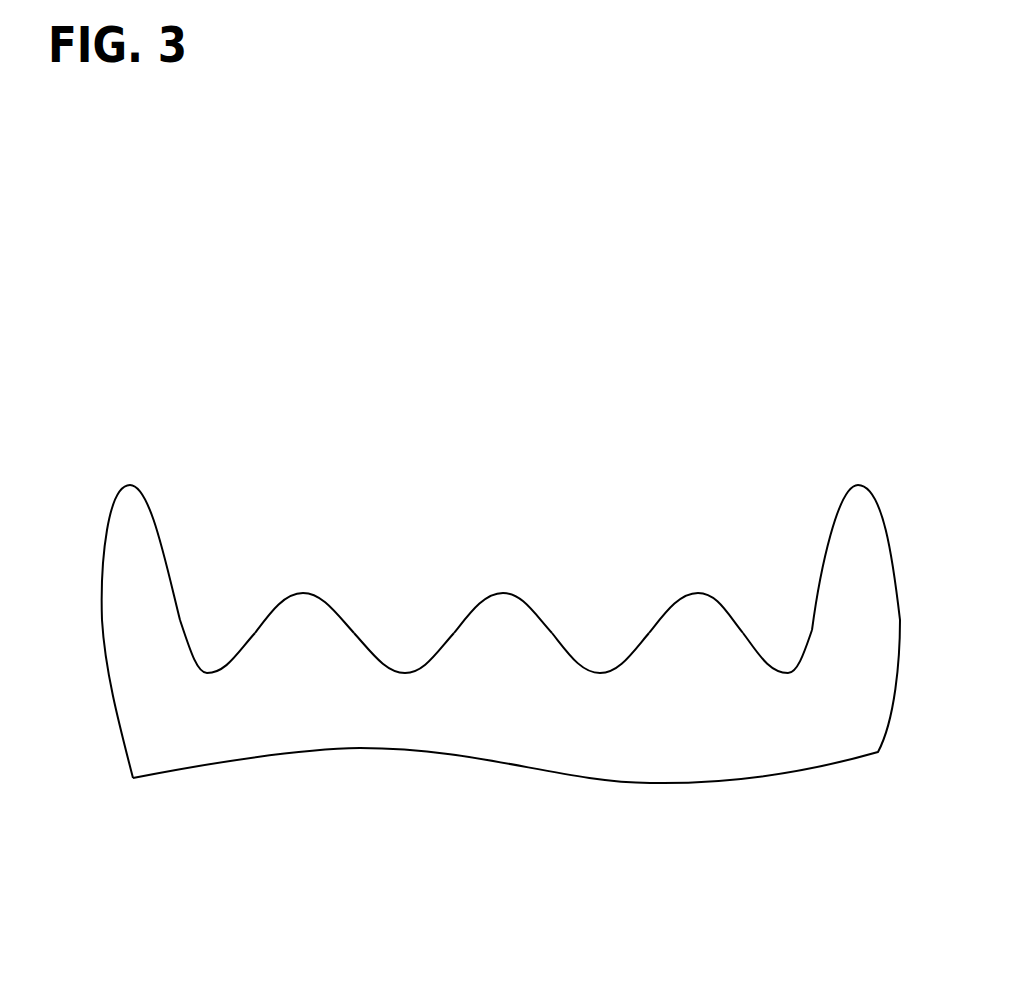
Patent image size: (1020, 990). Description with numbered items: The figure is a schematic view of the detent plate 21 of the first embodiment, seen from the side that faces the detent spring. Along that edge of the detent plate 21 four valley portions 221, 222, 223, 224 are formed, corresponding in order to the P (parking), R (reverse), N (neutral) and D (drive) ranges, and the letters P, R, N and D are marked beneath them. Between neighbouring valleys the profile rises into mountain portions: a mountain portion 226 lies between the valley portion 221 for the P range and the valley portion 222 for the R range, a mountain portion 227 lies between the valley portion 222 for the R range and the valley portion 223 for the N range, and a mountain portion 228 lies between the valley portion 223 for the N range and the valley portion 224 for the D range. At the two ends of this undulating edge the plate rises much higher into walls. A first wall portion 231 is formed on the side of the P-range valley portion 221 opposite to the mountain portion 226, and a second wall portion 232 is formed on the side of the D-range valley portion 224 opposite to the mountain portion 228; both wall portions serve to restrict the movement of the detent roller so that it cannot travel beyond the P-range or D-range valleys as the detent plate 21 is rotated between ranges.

The detent plate 21 is at (898, 496).
The valley portion 221 is at (207, 672).
The valley portion 222 is at (405, 672).
The valley portion 223 is at (600, 672).
The valley portion 224 is at (788, 672).
The mountain portion 226 is at (303, 593).
The mountain portion 227 is at (503, 593).
The mountain portion 228 is at (698, 593).
The first wall portion 231 is at (130, 485).
The second wall portion 232 is at (858, 485).